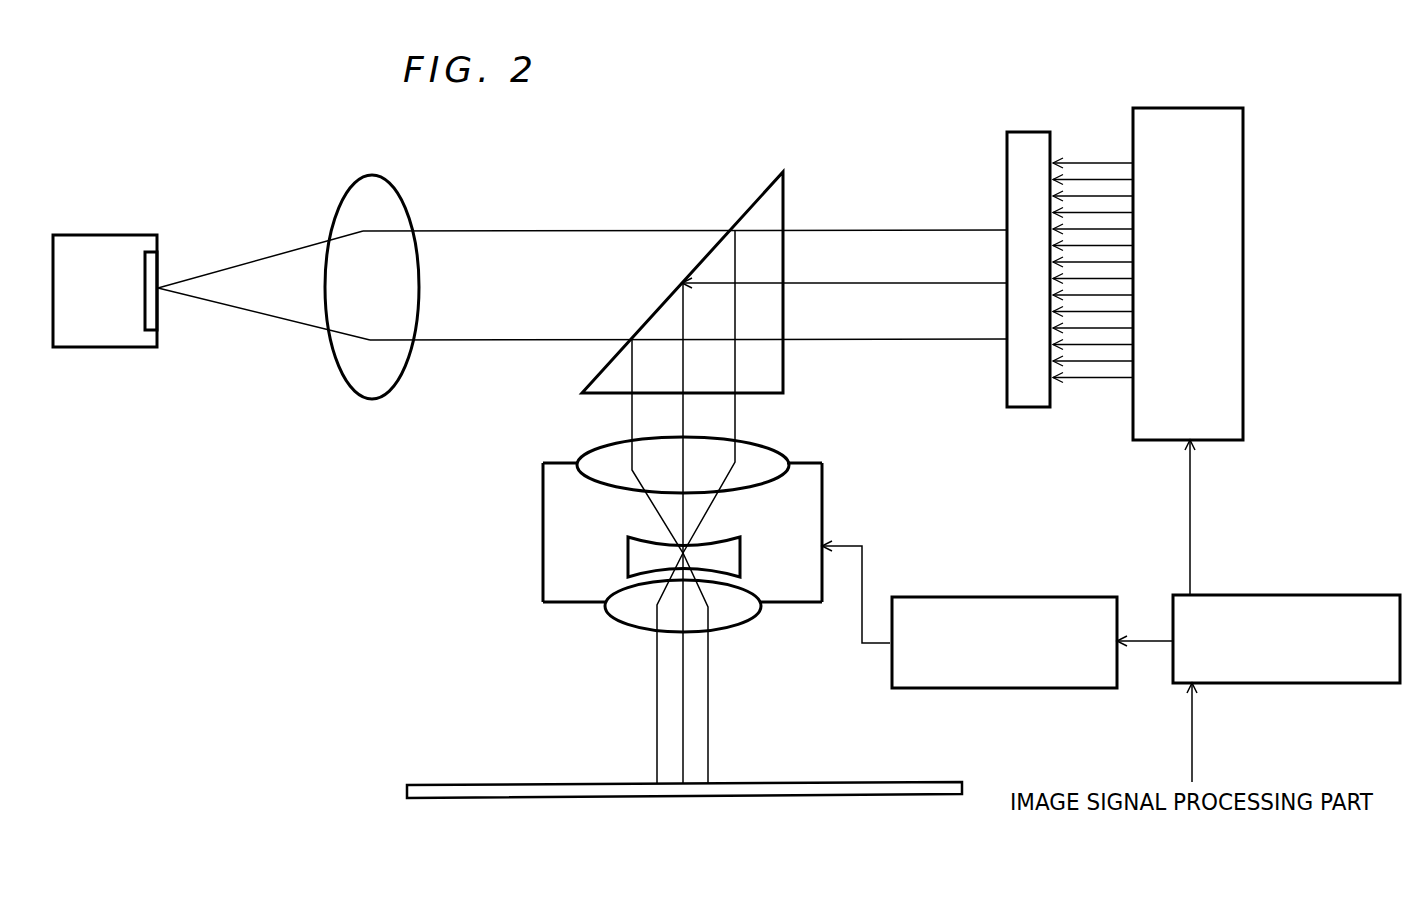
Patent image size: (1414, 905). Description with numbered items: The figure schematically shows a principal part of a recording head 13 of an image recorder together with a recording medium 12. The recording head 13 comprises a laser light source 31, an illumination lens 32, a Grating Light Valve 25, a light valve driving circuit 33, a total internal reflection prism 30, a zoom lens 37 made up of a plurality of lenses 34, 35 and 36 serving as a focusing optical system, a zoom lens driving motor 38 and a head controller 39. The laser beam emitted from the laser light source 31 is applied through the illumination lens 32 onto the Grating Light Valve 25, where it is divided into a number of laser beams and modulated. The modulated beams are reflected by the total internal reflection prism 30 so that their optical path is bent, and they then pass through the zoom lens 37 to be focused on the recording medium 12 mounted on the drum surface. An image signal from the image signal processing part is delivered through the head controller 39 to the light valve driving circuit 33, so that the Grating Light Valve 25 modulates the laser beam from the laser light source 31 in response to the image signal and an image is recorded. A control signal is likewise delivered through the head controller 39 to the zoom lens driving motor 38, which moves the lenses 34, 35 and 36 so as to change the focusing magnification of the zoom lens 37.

The recording medium 12 is at (962, 785).
The recording head 13 is at (667, 182).
The Grating Light Valve 25 is at (1032, 400).
The total internal reflection prism 30 is at (765, 363).
The laser light source 31 is at (108, 333).
The illumination lens 32 is at (377, 380).
The light valve driving circuit 33 is at (1223, 430).
The lens 34 is at (770, 458).
The lens 35 is at (742, 558).
The lens 36 is at (727, 618).
The zoom lens 37 is at (802, 510).
The zoom lens driving motor 38 is at (968, 678).
The head controller 39 is at (1317, 668).